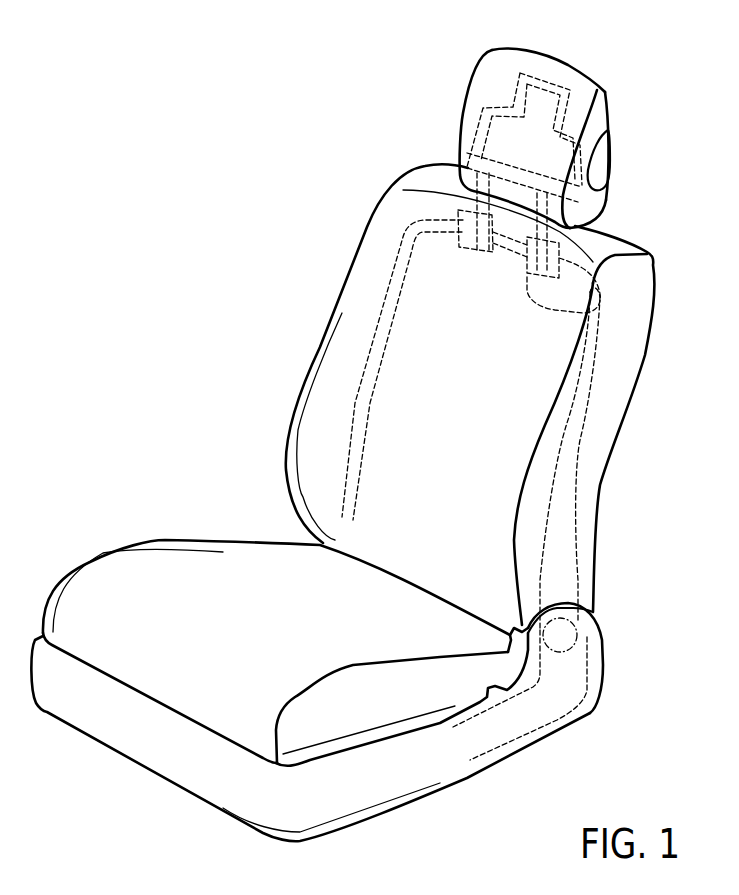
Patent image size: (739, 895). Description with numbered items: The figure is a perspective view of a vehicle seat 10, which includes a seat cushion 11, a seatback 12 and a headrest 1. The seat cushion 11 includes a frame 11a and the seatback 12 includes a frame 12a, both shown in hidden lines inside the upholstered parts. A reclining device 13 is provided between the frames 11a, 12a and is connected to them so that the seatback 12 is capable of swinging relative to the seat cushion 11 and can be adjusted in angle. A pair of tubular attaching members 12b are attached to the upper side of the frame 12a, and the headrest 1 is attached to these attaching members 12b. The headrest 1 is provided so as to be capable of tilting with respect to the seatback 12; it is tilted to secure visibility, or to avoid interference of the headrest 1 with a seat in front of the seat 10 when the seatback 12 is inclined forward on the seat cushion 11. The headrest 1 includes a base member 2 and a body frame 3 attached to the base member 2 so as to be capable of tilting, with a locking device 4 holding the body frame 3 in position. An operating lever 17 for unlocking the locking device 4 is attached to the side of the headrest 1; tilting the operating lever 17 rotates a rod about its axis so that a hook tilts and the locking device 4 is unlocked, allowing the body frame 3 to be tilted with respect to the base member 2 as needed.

The headrest 1 is at (458, 60).
The base member 2 is at (591, 205).
The body frame 3 is at (591, 112).
The locking device 4 is at (570, 197).
The operating lever 17 is at (606, 154).
The vehicle seat 10 is at (268, 280).
The seat cushion 11 is at (168, 568).
The frame 11a is at (562, 685).
The seatback 12 is at (318, 403).
The frame 12a is at (563, 475).
The tubular attaching members 12b is at (585, 309).
The reclining device 13 is at (580, 633).